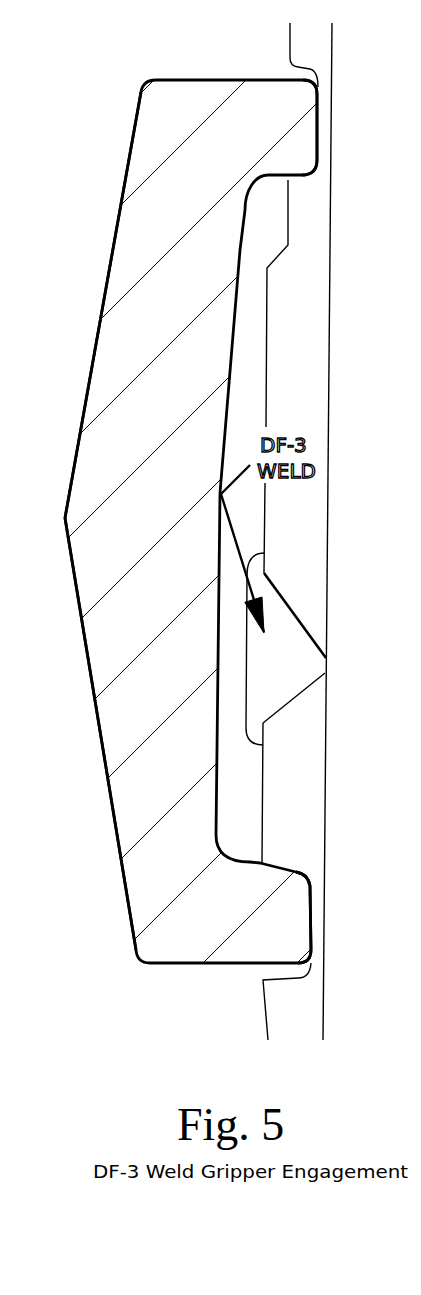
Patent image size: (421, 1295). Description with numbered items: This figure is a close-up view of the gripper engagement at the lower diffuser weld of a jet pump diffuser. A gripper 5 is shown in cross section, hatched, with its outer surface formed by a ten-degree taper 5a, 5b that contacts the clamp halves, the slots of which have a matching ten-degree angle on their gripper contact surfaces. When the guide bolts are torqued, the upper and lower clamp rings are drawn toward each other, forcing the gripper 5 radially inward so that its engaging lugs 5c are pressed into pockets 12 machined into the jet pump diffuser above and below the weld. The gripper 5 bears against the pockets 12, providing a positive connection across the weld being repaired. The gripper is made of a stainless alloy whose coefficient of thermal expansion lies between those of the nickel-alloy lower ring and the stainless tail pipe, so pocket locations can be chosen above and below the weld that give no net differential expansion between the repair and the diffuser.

The gripper 5 is at (138, 168).
The taper 5a is at (87, 384).
The taper 5b is at (81, 630).
The engaging lug 5c is at (283, 123).
The pocket 12 is at (318, 75).